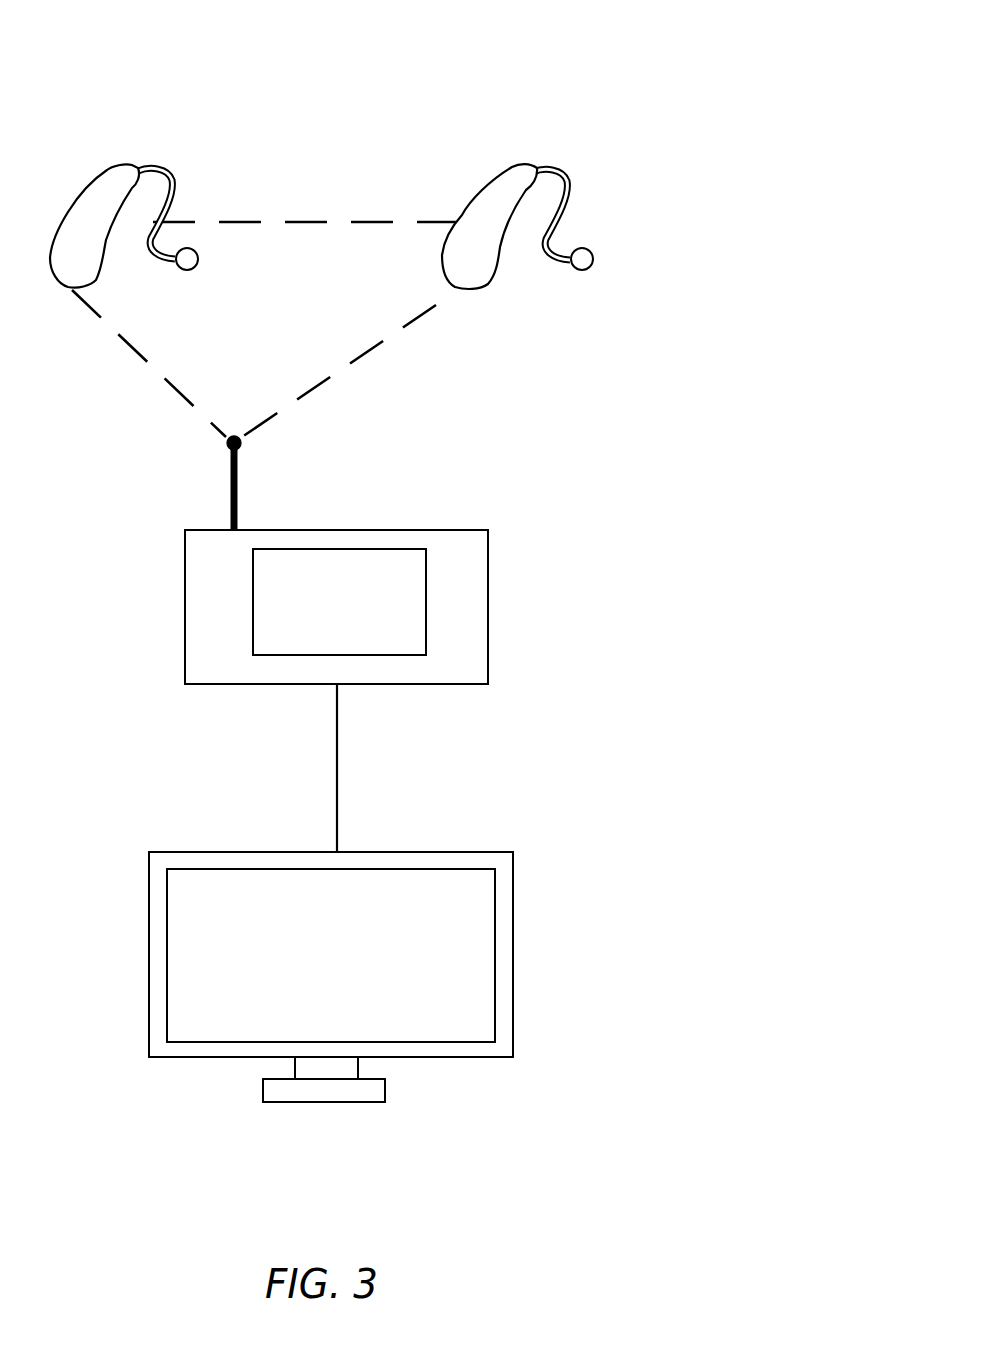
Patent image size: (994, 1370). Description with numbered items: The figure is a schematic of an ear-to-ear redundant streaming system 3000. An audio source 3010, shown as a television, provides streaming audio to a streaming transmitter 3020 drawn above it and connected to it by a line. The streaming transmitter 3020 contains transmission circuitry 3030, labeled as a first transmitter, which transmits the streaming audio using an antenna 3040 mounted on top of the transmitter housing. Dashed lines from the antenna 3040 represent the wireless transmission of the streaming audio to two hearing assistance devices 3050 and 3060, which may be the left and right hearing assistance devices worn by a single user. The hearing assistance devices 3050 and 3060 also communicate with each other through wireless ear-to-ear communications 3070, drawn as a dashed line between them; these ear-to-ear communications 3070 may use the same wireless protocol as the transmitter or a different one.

The ear-to-ear redundant streaming system 3000 is at (530, 52).
The audio source 3010 is at (405, 851).
The streaming transmitter 3020 is at (490, 646).
The transmission circuitry 3030 is at (266, 556).
The antenna 3040 is at (230, 473).
The hearing assistance device 3050 is at (92, 283).
The hearing assistance device 3060 is at (563, 164).
The ear-to-ear communications 3070 is at (342, 152).